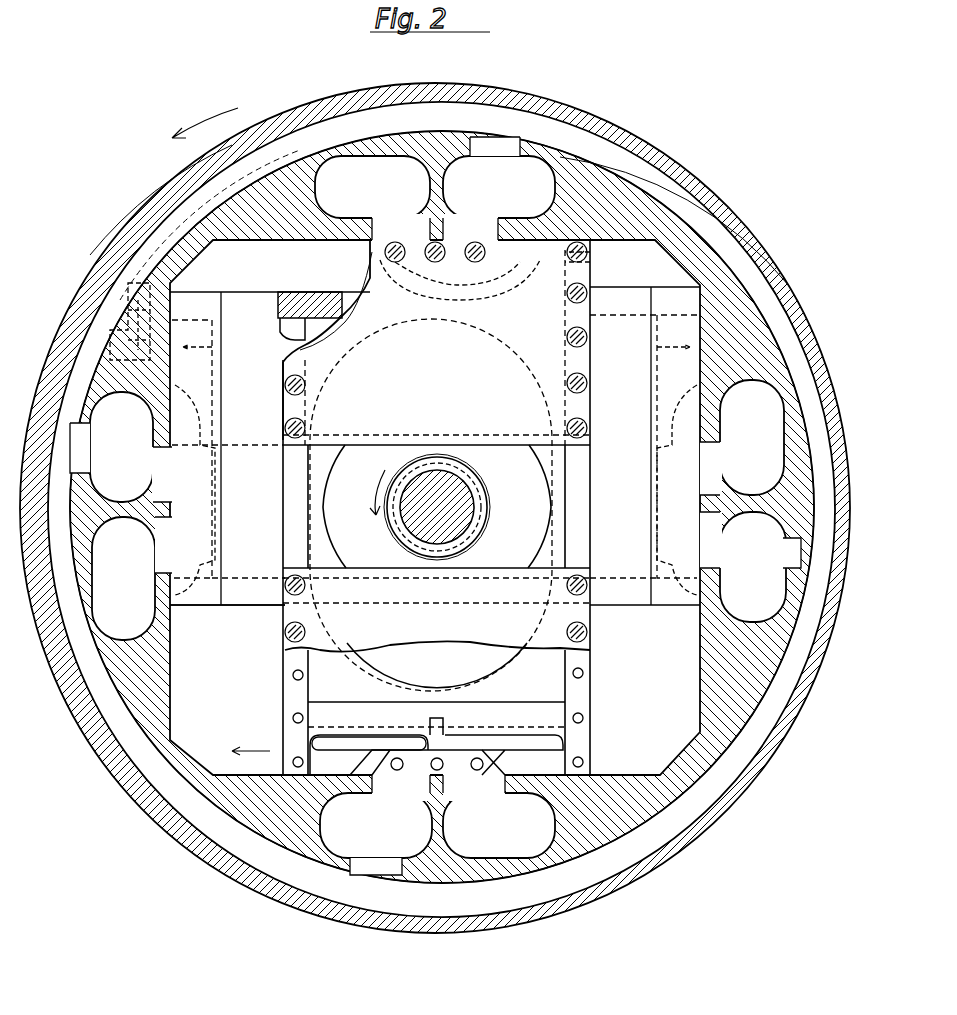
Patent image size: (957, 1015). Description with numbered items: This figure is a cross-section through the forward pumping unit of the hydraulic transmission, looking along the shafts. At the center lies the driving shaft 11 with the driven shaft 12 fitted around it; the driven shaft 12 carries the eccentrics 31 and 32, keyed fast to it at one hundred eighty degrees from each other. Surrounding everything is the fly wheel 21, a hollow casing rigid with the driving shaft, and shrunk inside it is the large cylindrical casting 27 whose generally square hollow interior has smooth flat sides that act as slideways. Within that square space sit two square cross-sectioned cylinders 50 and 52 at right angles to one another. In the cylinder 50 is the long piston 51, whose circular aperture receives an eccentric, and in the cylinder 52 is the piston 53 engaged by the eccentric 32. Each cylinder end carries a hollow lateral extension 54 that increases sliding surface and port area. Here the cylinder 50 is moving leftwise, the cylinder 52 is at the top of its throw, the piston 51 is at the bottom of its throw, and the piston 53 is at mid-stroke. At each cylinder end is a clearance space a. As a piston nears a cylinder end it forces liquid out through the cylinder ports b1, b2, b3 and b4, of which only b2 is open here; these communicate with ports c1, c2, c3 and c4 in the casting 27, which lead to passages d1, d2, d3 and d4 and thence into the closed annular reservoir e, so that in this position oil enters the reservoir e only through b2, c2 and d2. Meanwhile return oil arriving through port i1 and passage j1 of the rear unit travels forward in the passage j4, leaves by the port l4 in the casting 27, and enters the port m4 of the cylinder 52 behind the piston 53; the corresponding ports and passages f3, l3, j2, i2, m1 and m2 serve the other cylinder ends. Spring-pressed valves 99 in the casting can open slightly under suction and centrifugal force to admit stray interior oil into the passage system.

The fly wheel 21 is at (726, 189).
The cylindrical casting 27 is at (618, 188).
The annular reservoir e is at (581, 128).
The upper left port f3 is at (372, 187).
The upper left passage l3 is at (407, 218).
The port c3 is at (499, 133).
The passage d3 is at (486, 189).
The passage d1 is at (376, 834).
The port c1 is at (411, 797).
The port i1 is at (478, 793).
The passage j1 is at (482, 808).
The passage d4 is at (111, 447).
The port c4 is at (155, 473).
The port l4 is at (153, 545).
The passage j4 is at (138, 560).
The right upper port j2 is at (752, 437).
The right upper passage i2 is at (718, 472).
The port c2 is at (720, 532).
The passage d2 is at (730, 560).
The extension 54 is at (211, 295).
The cylinder 52 is at (268, 607).
The piston 51 is at (437, 431).
The cylinder 50 is at (268, 690).
The eccentric 31 is at (367, 360).
The piston 53 is at (350, 272).
The driving shaft 11 is at (457, 500).
The driven shaft 12 is at (395, 529).
The eccentric 32 is at (437, 664).
The bottom valve plate m1 is at (549, 763).
The port b1 is at (350, 771).
The port b4 is at (222, 449).
The port m4 is at (228, 511).
The port b2 is at (682, 549).
The right valve plate m2 is at (640, 345).
The port b3 is at (599, 255).
The clearance space a is at (475, 736).
The spring-pressed valve 99 is at (130, 302).